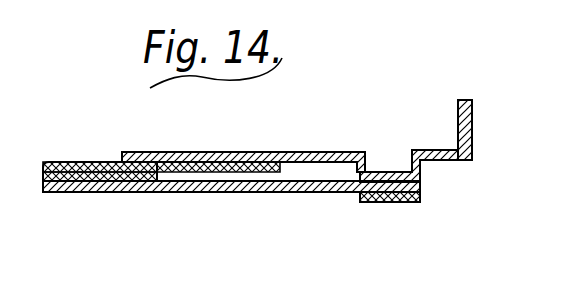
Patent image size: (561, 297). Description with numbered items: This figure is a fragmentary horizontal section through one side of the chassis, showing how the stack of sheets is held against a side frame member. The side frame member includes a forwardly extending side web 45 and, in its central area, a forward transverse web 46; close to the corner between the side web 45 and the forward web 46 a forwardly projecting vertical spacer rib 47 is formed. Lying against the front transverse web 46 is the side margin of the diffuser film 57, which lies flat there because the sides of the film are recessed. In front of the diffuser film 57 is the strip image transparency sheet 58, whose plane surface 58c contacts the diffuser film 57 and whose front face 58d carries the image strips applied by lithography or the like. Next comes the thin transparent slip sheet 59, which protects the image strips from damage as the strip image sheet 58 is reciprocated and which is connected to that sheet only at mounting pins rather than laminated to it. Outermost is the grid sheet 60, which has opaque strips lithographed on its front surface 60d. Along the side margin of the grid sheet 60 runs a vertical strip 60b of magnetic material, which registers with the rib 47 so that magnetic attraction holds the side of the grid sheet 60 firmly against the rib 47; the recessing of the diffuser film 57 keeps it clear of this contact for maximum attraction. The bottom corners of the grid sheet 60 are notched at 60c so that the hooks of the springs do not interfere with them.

The side web 45 is at (472, 120).
The forward transverse web 46 is at (220, 163).
The vertical spacer rib 47 is at (385, 172).
The diffuser film 57 is at (107, 162).
The strip image transparency sheet 58 is at (42, 180).
The plane surface 58c is at (67, 162).
The front face 58d is at (124, 181).
The transparent slip sheet 59 is at (36, 182).
The grid sheet 60 is at (85, 193).
The magnetic strips 60b is at (390, 202).
The notches 60c is at (282, 184).
The front surface 60d is at (218, 193).